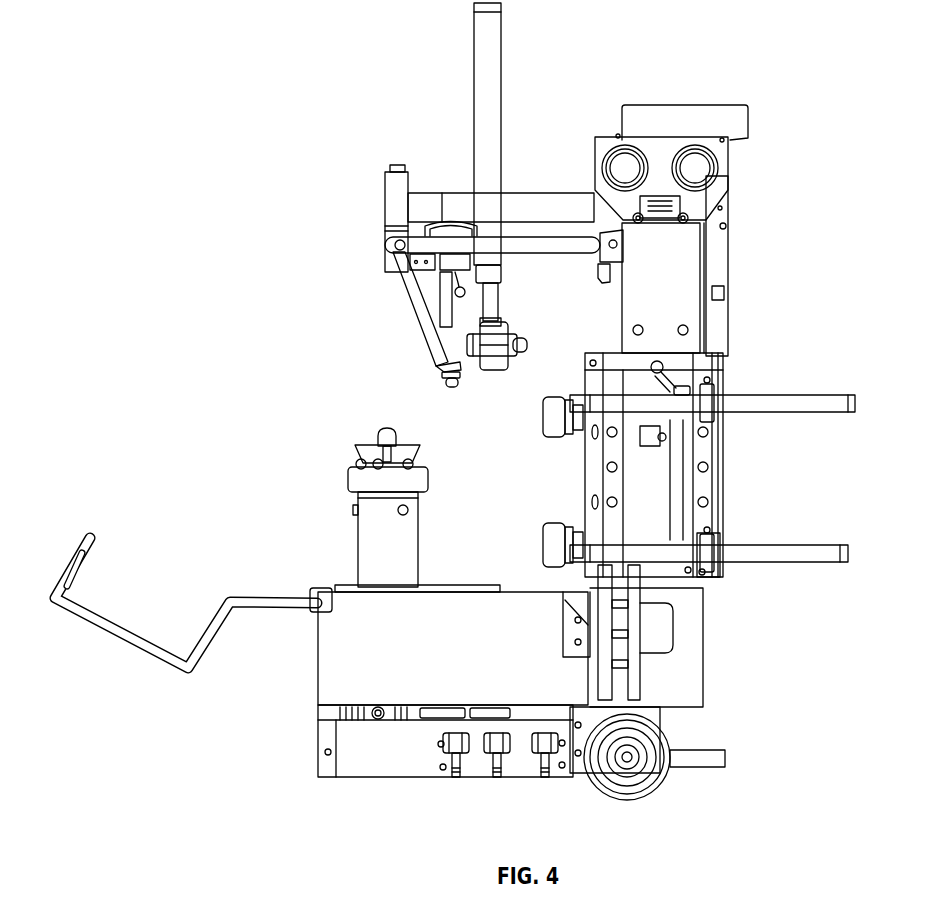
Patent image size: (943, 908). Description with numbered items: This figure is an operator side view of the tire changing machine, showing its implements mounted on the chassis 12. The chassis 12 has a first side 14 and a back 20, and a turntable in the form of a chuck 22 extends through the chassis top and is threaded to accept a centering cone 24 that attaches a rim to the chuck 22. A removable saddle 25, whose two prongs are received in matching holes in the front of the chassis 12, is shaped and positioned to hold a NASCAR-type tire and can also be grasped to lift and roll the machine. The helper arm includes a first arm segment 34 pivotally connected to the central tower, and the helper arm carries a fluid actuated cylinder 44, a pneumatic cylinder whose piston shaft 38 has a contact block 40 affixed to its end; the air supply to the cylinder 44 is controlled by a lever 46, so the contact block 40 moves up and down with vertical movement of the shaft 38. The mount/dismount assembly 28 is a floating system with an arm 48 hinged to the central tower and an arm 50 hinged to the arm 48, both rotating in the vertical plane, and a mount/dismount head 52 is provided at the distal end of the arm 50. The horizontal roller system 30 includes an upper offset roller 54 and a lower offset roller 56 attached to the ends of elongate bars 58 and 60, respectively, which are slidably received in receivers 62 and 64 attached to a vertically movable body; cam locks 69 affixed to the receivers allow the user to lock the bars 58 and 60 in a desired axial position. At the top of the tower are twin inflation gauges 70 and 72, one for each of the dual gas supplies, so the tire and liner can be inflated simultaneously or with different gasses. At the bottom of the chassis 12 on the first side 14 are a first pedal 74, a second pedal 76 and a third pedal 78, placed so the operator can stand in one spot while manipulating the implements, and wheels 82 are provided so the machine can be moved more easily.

The chassis 12 is at (358, 780).
The first side 14 is at (434, 671).
The back 20 is at (752, 458).
The chuck 22 is at (420, 481).
The centering cone 24 is at (405, 451).
The saddle 25 is at (188, 673).
The mount/dismount assembly 28 is at (415, 340).
The horizontal roller system 30 is at (748, 328).
The first arm segment 34 is at (553, 193).
The piston shaft 38 is at (499, 300).
The contact block 40 is at (484, 371).
The fluid actuated cylinder 44 is at (502, 52).
The lever 46 is at (461, 297).
The arm 48 is at (562, 255).
The arm 50 is at (409, 318).
The mount/dismount head 52 is at (450, 388).
The upper offset roller 54 is at (543, 430).
The lower offset roller 56 is at (543, 540).
The elongate bar 58 is at (808, 394).
The elongate bar 60 is at (816, 545).
The receiver 62 is at (632, 394).
The receiver 64 is at (700, 573).
The cam locks 69 is at (728, 378).
The inflation gauge 70 is at (603, 162).
The inflation gauge 72 is at (727, 152).
The first pedal 74 is at (455, 779).
The second pedal 76 is at (496, 779).
The third pedal 78 is at (544, 779).
The wheels 82 is at (624, 799).